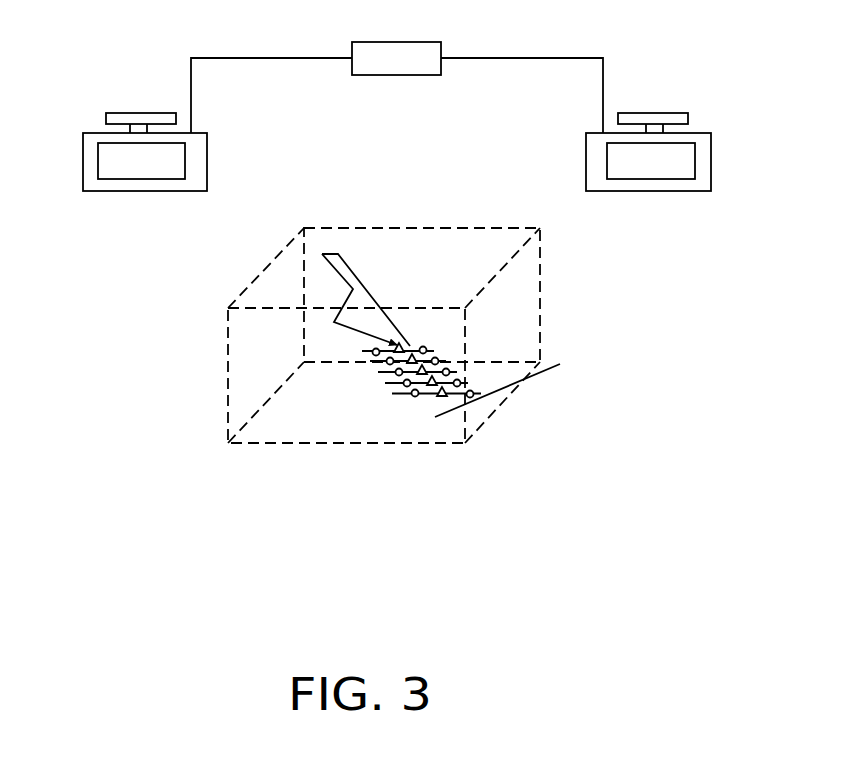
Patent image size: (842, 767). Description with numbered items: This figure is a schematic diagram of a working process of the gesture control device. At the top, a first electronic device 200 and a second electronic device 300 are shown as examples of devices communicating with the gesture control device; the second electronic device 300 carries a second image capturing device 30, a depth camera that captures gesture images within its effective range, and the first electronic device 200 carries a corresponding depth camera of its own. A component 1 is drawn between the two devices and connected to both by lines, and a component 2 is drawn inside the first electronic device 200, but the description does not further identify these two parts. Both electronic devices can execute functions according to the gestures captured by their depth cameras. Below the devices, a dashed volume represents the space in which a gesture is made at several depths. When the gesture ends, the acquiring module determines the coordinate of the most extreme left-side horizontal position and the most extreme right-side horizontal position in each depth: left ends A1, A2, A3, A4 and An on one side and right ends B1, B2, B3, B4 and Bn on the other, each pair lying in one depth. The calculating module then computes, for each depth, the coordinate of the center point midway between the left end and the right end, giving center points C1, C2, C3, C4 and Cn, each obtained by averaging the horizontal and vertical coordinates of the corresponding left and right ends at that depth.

The control unit 1 is at (397, 42).
The first detector 2 is at (115, 143).
The first electronic device 200 is at (140, 112).
The second image capturing device 30 is at (653, 112).
The second electronic device 300 is at (695, 132).
The left end A1 is at (371, 351).
The left end A2 is at (385, 360).
The left end A3 is at (394, 371).
The left end A4 is at (402, 382).
The left end An is at (410, 393).
The right end B1 is at (428, 348).
The right end B2 is at (440, 359).
The right end B3 is at (451, 370).
The right end B4 is at (462, 381).
The right end Bn is at (475, 393).
The center point C1 is at (373, 349).
The center point C2 is at (411, 352).
The center point C3 is at (421, 376).
The center point C4 is at (433, 388).
The center point Cn is at (444, 398).